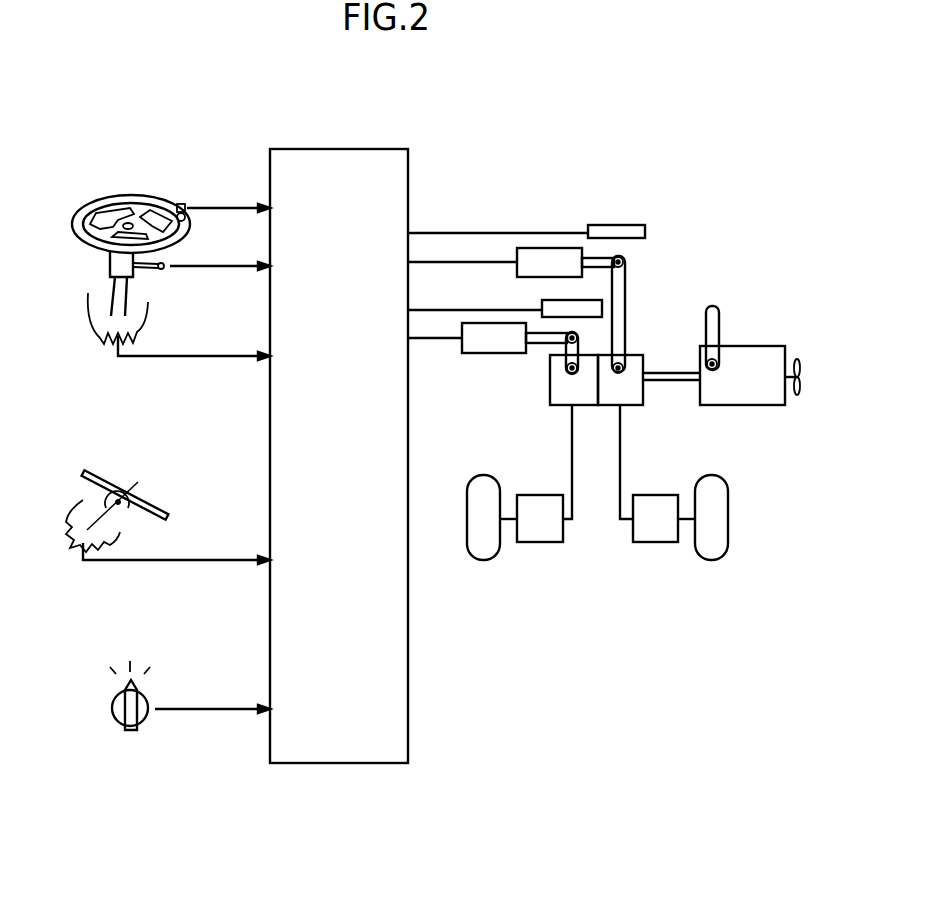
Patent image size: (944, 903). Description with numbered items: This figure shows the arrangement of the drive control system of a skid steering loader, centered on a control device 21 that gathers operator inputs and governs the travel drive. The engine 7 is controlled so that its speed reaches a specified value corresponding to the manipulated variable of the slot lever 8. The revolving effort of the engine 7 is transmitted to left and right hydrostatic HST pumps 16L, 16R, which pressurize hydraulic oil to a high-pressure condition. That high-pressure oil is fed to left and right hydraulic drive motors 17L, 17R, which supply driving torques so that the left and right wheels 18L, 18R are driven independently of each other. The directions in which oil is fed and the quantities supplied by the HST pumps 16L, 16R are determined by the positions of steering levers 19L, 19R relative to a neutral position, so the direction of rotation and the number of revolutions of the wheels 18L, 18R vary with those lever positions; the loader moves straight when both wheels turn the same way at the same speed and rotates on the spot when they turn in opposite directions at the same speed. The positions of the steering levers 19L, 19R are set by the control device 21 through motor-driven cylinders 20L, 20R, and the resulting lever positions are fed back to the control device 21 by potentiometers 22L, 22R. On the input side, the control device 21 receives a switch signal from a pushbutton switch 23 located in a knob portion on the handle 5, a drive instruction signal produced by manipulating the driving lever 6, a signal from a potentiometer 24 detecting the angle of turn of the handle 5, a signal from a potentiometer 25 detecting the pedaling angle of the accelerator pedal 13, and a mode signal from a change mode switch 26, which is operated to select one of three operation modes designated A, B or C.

The handle 5 is at (85, 212).
The pushbutton switch 23 is at (182, 204).
The driving lever 6 is at (148, 270).
The potentiometer 24 is at (88, 322).
The control device 21 is at (380, 148).
The potentiometer 22R is at (612, 225).
The motor-driven cylinder 20R is at (515, 276).
The steering lever 19R is at (626, 283).
The potentiometer 22L is at (545, 302).
The motor-driven cylinder 20L is at (515, 353).
The steering lever 19L is at (560, 350).
The HST pump 16L is at (560, 395).
The HST pump 16R is at (618, 385).
The engine 7 is at (750, 365).
The slot lever 8 is at (714, 325).
The wheel 18L is at (485, 545).
The hydraulic drive motor 17L is at (548, 535).
The hydraulic drive motor 17R is at (652, 527).
The wheel 18R is at (707, 530).
The accelerator pedal 13 is at (108, 480).
The potentiometer 25 is at (70, 540).
The change mode switch 26 is at (112, 718).